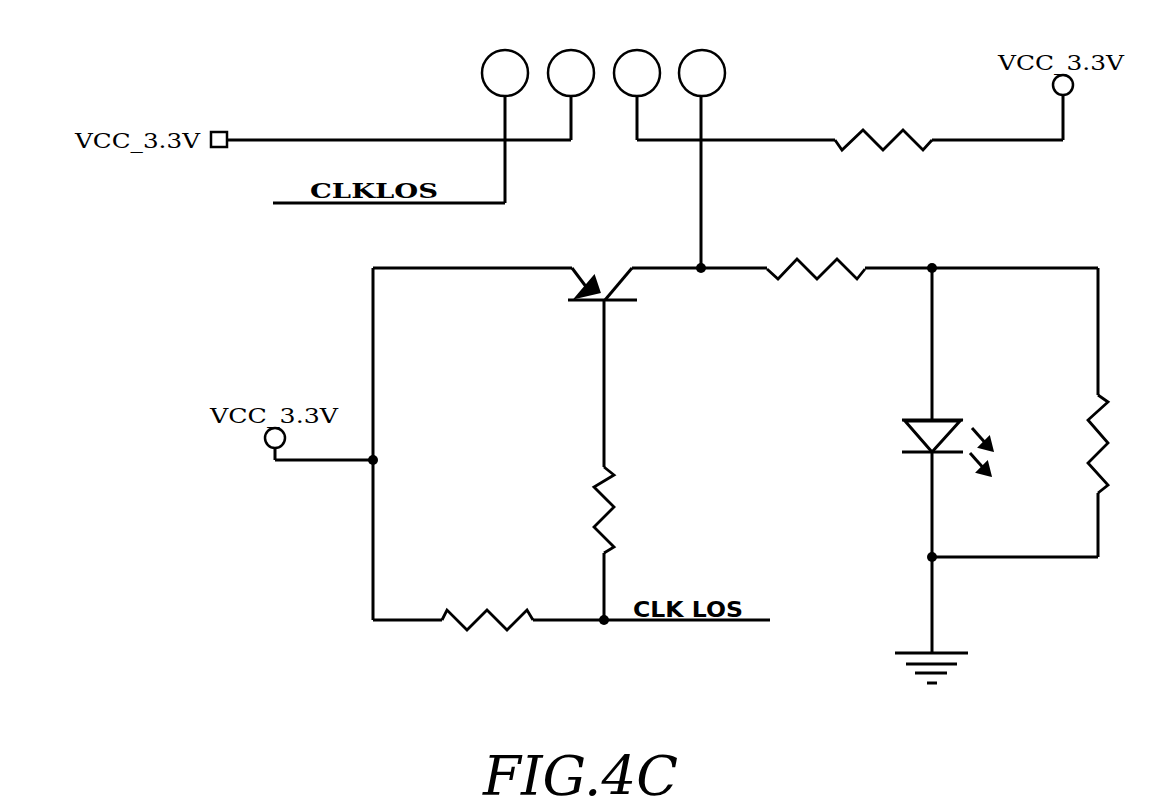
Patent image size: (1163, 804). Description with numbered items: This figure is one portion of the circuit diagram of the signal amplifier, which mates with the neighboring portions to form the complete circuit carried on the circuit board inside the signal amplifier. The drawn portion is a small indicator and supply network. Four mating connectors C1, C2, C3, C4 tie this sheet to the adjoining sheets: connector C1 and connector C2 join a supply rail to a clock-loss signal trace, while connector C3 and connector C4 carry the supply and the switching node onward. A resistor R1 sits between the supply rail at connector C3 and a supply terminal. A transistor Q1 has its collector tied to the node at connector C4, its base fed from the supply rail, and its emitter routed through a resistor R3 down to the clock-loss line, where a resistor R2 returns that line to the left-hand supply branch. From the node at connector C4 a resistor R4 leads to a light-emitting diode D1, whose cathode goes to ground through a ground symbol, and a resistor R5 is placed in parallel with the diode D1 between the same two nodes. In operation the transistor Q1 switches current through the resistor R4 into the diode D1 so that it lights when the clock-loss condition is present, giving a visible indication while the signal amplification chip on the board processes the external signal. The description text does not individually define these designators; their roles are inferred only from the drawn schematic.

The resistor R1 4.7k R1 is at (882, 142).
The resistor R2 10k R2 is at (485, 623).
The resistor R3 4.7k R3 is at (626, 510).
The resistor R4 200R R4 is at (815, 272).
The resistor R5 10k R5 is at (1116, 444).
The transistor Q1 BTB1424N3 Q1 is at (608, 255).
The LED D1 is at (966, 437).
The connector C1 is at (505, 73).
The connector C2 is at (571, 73).
The connector C3 is at (637, 73).
The connector C4 is at (702, 73).